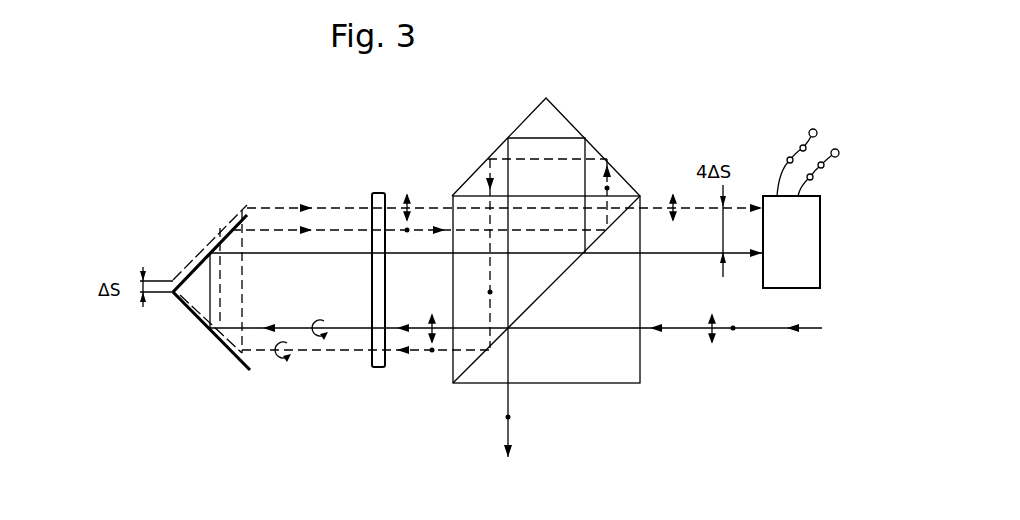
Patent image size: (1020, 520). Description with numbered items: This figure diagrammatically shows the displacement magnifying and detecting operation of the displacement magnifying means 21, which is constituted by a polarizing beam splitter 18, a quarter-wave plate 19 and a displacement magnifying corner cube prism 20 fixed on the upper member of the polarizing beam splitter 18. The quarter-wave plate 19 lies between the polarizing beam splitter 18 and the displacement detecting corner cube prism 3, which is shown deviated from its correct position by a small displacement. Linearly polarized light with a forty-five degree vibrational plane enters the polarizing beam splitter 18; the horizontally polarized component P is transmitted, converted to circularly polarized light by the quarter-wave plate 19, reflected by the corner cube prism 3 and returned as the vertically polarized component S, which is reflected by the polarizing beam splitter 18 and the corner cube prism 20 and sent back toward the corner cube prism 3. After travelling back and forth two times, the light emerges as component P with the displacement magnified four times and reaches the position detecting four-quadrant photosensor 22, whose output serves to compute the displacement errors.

The corner cube prism 3 is at (227, 350).
The polarizing beam splitter 18 is at (630, 375).
The quarter-wave plate 19 is at (378, 367).
The displacement magnifying corner cube prism 20 is at (562, 125).
The displacement magnifying means 21 is at (448, 402).
The position detecting 4-quadrant photosensor 22 is at (768, 196).